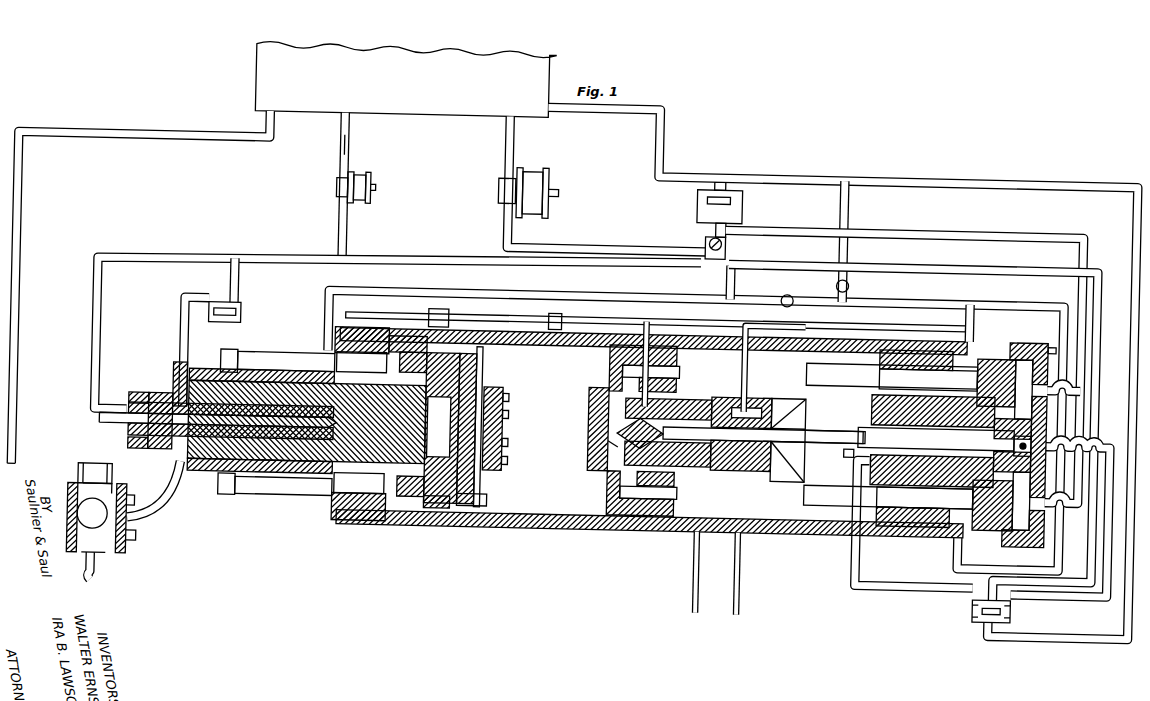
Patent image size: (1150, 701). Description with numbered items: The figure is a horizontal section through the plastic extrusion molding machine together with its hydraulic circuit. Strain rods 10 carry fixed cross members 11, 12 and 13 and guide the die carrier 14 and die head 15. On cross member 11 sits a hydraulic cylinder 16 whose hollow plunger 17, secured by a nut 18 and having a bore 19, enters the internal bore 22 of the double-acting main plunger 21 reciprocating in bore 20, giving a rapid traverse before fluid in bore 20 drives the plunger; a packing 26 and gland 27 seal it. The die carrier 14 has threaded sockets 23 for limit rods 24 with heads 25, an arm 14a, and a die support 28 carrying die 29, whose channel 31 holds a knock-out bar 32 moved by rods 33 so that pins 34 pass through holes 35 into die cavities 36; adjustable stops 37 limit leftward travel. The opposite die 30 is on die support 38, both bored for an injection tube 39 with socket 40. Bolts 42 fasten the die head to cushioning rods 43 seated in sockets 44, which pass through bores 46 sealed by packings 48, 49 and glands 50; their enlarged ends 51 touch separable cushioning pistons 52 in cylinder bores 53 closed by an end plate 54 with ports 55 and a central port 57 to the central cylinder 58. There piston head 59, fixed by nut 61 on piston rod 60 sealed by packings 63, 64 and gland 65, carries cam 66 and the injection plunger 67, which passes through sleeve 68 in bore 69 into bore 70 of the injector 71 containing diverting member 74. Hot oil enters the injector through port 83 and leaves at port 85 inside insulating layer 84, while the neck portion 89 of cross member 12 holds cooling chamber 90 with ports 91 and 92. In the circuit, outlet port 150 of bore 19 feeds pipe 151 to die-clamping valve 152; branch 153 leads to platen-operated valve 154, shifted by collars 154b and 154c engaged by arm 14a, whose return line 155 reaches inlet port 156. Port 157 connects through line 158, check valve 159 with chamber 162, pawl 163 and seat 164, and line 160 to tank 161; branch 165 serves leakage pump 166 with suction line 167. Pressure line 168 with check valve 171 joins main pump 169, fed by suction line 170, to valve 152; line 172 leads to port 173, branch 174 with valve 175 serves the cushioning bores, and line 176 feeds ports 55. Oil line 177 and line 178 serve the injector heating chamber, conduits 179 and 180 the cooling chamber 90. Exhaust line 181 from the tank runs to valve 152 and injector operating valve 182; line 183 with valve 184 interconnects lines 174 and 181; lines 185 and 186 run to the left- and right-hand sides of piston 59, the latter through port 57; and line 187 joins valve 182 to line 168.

The strain rods 10 is at (527, 324).
The cross member 11 is at (340, 344).
The cross member 12 is at (828, 349).
The cross member 13 is at (942, 343).
The die carrier 14 is at (446, 358).
The arm 14a is at (436, 313).
The die head 15 is at (670, 344).
The hydraulic cylinder 16 is at (214, 374).
The hollow plunger 17 is at (160, 396).
The nut 18 is at (134, 400).
The bore 19 is at (180, 382).
The cylinder bore 20 is at (258, 362).
The main plunger 21 is at (284, 384).
The internal bore 22 is at (204, 480).
The threaded sockets 23 is at (432, 330).
The limit rods 24 is at (303, 501).
The heads 25 is at (234, 356).
The packing 26 is at (361, 500).
The gland 27 is at (394, 501).
The die support 28 is at (488, 498).
The die 29 is at (506, 465).
The die 30 is at (588, 390).
The channel 31 is at (478, 370).
The knock-out bar 32 is at (481, 350).
The rods 33 is at (482, 523).
The pins 34 is at (509, 412).
The holes 35 is at (504, 390).
The die cavities 36 is at (507, 439).
The adjustable stops 37 is at (416, 501).
The die support 38 is at (610, 368).
The injection tube 39 is at (600, 434).
The injection socket 40 is at (610, 445).
The bolts 42 is at (610, 495).
The cushioning rods 43 is at (808, 369).
The sockets 44 is at (672, 369).
The bores 46 is at (921, 343).
The packing 48 is at (896, 364).
The packing 49 is at (901, 343).
The glands 50 is at (880, 356).
The enlarged ends 51 is at (972, 372).
The cushioning pistons 52 is at (1022, 336).
The cylinder bores 53 is at (1004, 337).
The end plate 54 is at (1044, 348).
The ports 55 is at (1042, 376).
The central port 57 is at (1040, 435).
The central cylinder 58 is at (932, 466).
The piston head 59 is at (994, 450).
The piston rod 60 is at (948, 436).
The nut 61 is at (996, 418).
The packing 63 is at (900, 418).
The packing 64 is at (876, 404).
The gland 65 is at (874, 412).
The annular cam 66 is at (846, 449).
The injection plunger 67 is at (820, 424).
The sleeve 68 is at (774, 415).
The bore 69 is at (775, 446).
The bore 70 is at (700, 402).
The injector 71 is at (668, 402).
The diverting member 74 is at (638, 458).
The port 83 is at (690, 458).
The heat-insulating layer 84 is at (670, 460).
The port 85 is at (648, 402).
The neck portion 89 is at (750, 460).
The annular chamber 90 is at (752, 410).
The entrance port 91 is at (722, 400).
The exit port 92 is at (727, 466).
The outlet port 150 is at (116, 432).
The pipe 151 is at (447, 264).
The die-clamping valve 152 is at (692, 201).
The branch 153 is at (239, 287).
The platen-operated valve 154 is at (205, 312).
The collar 154b is at (355, 304).
The collar 154c is at (556, 300).
The return line 155 is at (180, 340).
The inlet port 156 is at (224, 330).
The port 157 is at (171, 494).
The line 158 is at (151, 520).
The check valve 159 is at (76, 492).
The line 160 is at (168, 139).
The oil reservoir 161 is at (252, 84).
The chamber 162 is at (134, 504).
The pawl 163 is at (94, 537).
The seat 164 is at (131, 550).
The branch line 165 is at (344, 231).
The leakage pump 166 is at (370, 198).
The suction line 167 is at (344, 150).
The pressure line 168 is at (603, 249).
The main pump 169 is at (547, 184).
The suction line 170 is at (508, 148).
The check valve 171 is at (721, 238).
The line 172 is at (513, 294).
The port 173 is at (327, 323).
The branch line 174 is at (772, 296).
The manually operated valve 175 is at (786, 302).
The line 176 is at (790, 227).
The oil line 177 is at (640, 328).
The line 178 is at (696, 563).
The cooling conduit 179 is at (745, 322).
The cooling conduit 180 is at (746, 568).
The exhaust line 181 is at (608, 110).
The injector operating valve 182 is at (976, 607).
The line 183 is at (846, 205).
The manually operated valve 184 is at (848, 281).
The line 185 is at (896, 579).
The line 186 is at (1111, 438).
The line 187 is at (958, 272).